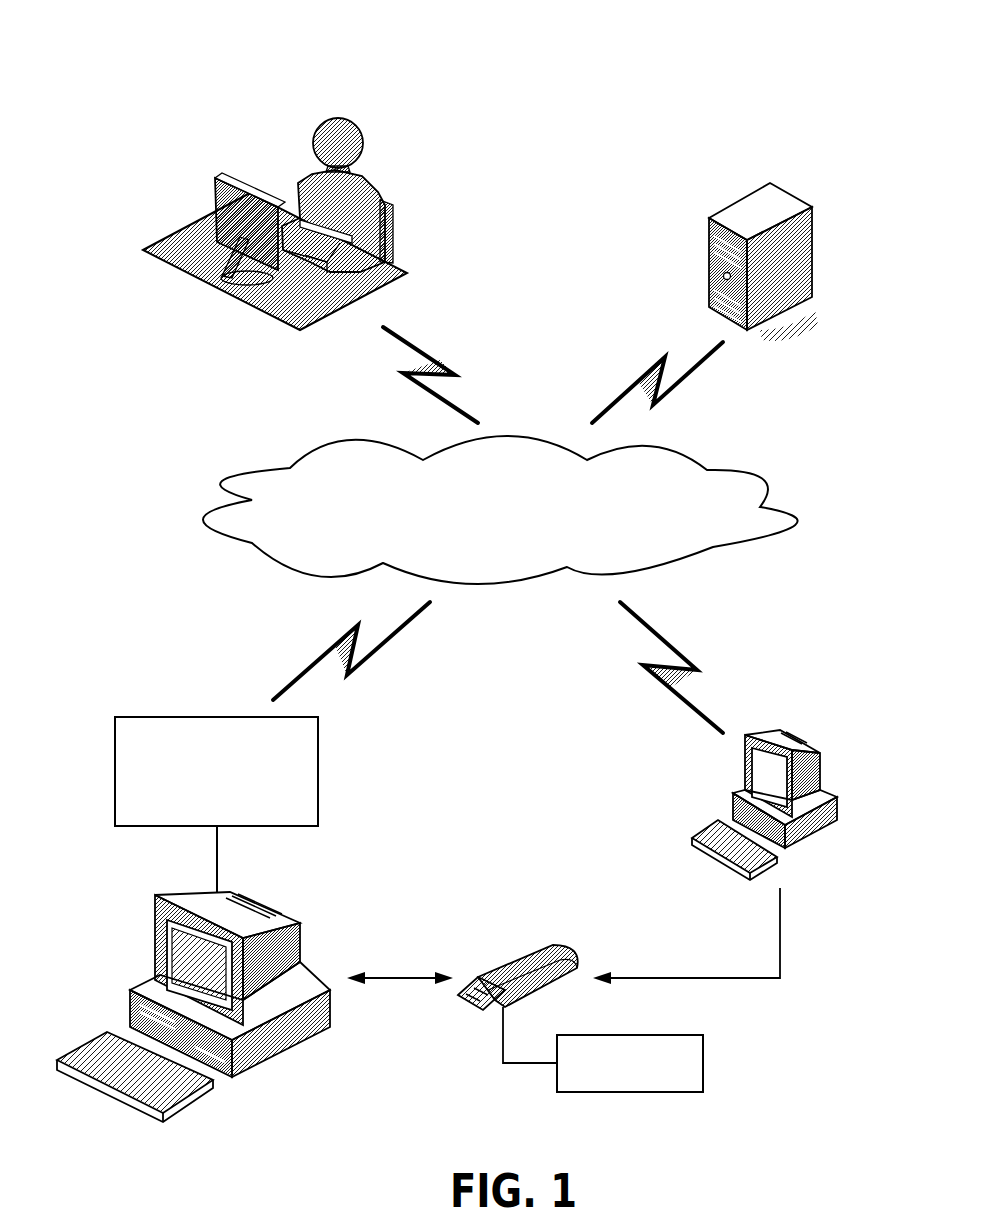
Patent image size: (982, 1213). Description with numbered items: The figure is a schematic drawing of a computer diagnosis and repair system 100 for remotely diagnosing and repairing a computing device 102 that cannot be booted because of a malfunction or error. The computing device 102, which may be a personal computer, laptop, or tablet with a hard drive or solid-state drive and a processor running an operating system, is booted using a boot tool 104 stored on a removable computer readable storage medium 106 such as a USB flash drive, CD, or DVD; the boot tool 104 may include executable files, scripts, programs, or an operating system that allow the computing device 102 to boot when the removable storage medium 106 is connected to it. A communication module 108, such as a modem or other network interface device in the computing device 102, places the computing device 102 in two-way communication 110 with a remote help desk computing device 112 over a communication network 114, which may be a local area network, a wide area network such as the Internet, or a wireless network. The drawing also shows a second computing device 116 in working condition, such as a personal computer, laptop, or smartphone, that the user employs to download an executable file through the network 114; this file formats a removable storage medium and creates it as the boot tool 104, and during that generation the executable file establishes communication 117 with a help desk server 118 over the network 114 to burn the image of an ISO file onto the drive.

The computer diagnosis and repair system 100 is at (162, 78).
The computing device 102 is at (267, 1062).
The boot tool 104 is at (705, 1063).
The removable computer readable storage medium 106 is at (537, 947).
The communication module 108 is at (115, 742).
The two-way communication 110 is at (437, 357).
The remote help desk computing device 112 is at (397, 223).
The communication network 114 is at (773, 477).
The second computing device 116 is at (823, 777).
The communication 117 is at (637, 380).
The help desk server 118 is at (812, 220).